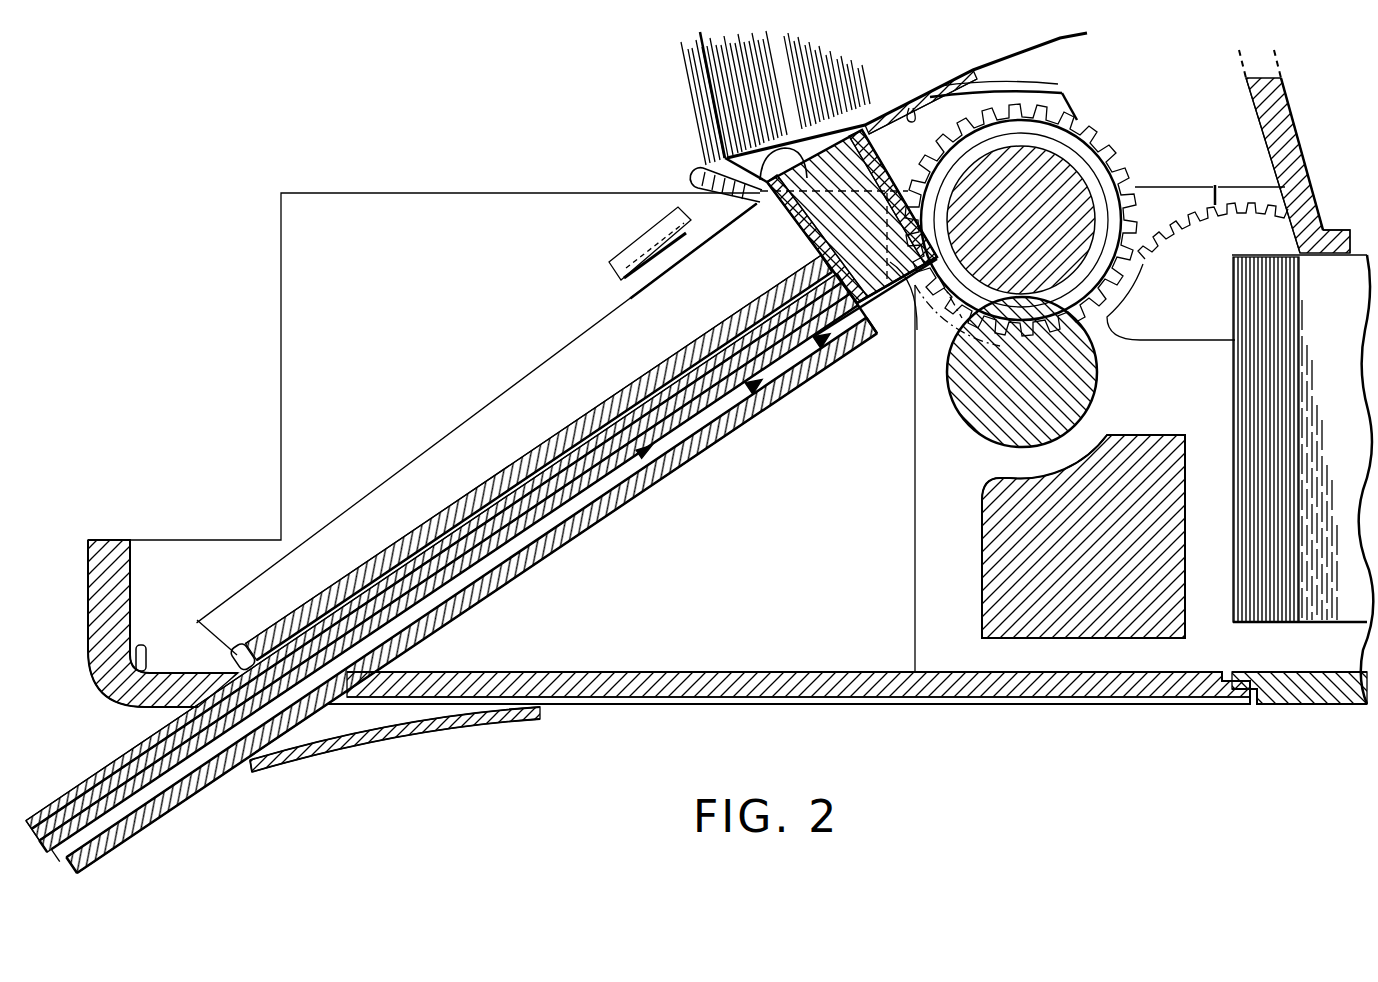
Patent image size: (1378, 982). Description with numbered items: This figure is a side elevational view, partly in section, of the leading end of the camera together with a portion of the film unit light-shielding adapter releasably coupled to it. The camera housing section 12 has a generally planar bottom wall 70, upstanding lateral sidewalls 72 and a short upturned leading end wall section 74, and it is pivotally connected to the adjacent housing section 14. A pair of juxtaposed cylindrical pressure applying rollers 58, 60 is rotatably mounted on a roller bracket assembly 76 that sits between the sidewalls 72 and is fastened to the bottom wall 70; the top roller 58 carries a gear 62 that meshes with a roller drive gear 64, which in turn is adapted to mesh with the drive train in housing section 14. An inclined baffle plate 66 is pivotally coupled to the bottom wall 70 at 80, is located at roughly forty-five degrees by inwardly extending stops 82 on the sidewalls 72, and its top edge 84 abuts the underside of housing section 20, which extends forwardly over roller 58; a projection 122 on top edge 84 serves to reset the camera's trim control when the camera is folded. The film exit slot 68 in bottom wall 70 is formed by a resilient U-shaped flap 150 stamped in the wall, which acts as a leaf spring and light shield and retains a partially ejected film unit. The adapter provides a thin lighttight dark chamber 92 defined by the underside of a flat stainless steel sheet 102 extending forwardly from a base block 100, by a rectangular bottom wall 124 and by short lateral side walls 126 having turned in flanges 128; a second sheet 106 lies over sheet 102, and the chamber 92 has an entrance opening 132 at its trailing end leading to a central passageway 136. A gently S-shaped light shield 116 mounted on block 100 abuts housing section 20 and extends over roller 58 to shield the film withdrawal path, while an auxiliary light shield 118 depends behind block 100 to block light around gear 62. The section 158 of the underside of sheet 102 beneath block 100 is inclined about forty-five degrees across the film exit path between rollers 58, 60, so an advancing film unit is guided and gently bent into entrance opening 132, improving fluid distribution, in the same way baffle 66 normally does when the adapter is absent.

The housing section 12 is at (270, 208).
The housing section 14 is at (1318, 700).
The housing section 20 is at (708, 96).
The pressure applying roller 58 is at (1050, 180).
The pressure applying roller 60 is at (1082, 348).
The gear 62 is at (1118, 178).
The roller drive gear 64 is at (1187, 253).
The baffle plate 66 is at (609, 419).
The film exit slot 68 is at (270, 752).
The bottom wall 70 is at (1035, 704).
The lateral sidewalls 72 is at (462, 221).
The leading end wall section 74 is at (95, 585).
The roller bracket assembly 76 is at (915, 487).
The pivot 80 is at (235, 660).
The stops 82 is at (642, 252).
The top edge 84 is at (792, 240).
The dark chamber 92 is at (110, 752).
The base block 100 is at (763, 165).
The sheet 102 is at (735, 394).
The second sheet 106 is at (670, 409).
The light shield 116 is at (1015, 86).
The auxiliary light shield 118 is at (911, 108).
The projection 122 is at (695, 176).
The bottom wall 124 is at (628, 500).
The lateral side walls 126 is at (714, 423).
The turned in flange 128 is at (697, 455).
The entrance opening 132 is at (873, 305).
The central passageway 136 is at (796, 376).
The flap 150 is at (415, 728).
The inclined surface 158 is at (875, 307).